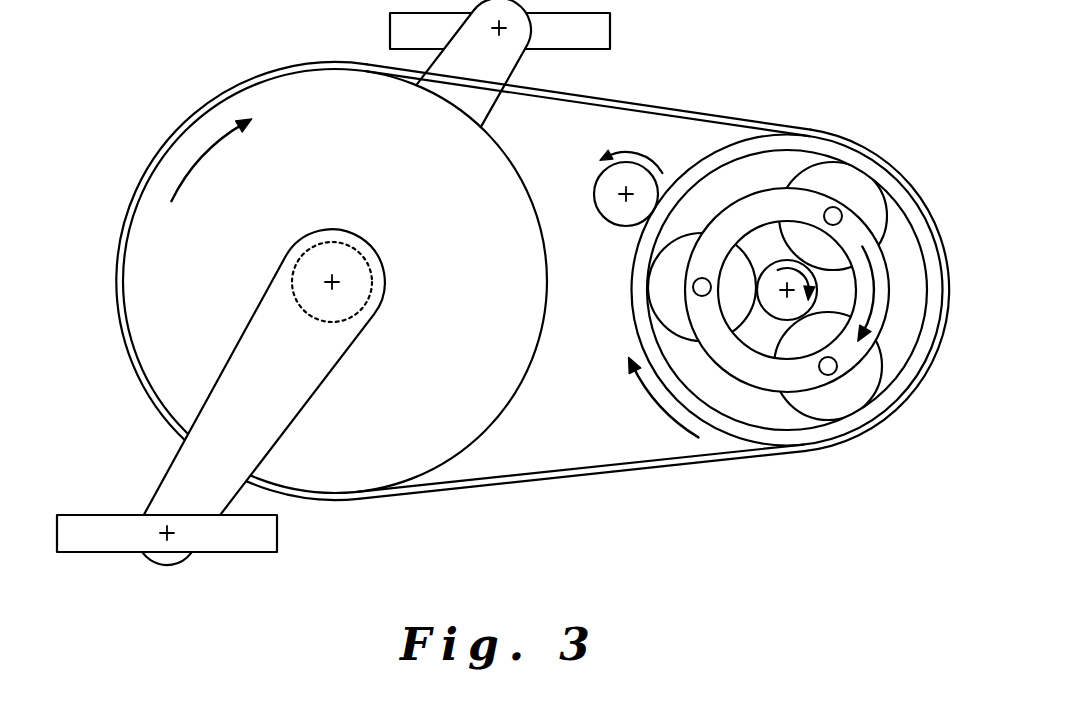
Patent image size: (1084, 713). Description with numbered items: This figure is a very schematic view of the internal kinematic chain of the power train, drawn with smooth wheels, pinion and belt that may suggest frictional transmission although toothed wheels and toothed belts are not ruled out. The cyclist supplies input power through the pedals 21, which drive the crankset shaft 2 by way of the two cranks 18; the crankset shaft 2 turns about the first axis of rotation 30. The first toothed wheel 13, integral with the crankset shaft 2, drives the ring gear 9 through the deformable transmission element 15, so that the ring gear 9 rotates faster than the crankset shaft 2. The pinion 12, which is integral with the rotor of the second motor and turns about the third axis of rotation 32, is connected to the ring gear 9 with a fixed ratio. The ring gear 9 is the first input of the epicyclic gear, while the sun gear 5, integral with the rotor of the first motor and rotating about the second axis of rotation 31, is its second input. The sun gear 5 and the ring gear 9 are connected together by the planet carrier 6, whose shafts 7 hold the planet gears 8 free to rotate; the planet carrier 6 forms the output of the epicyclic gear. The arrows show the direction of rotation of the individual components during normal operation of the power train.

The crankset shaft 2 is at (370, 283).
The sun gear 5 is at (794, 267).
The planet carrier 6 is at (880, 280).
The shafts 7 is at (829, 368).
The planet gear 8 is at (877, 340).
The ring gear 9 is at (794, 140).
The pinion 12 is at (643, 182).
The first toothed wheel 13 is at (460, 453).
The deformable transmission element 15 is at (580, 477).
The cranks 18 is at (195, 490).
The pedals 21 is at (127, 530).
The first axis of rotation 30 is at (338, 279).
The second axis of rotation 31 is at (784, 298).
The third axis of rotation 32 is at (622, 200).